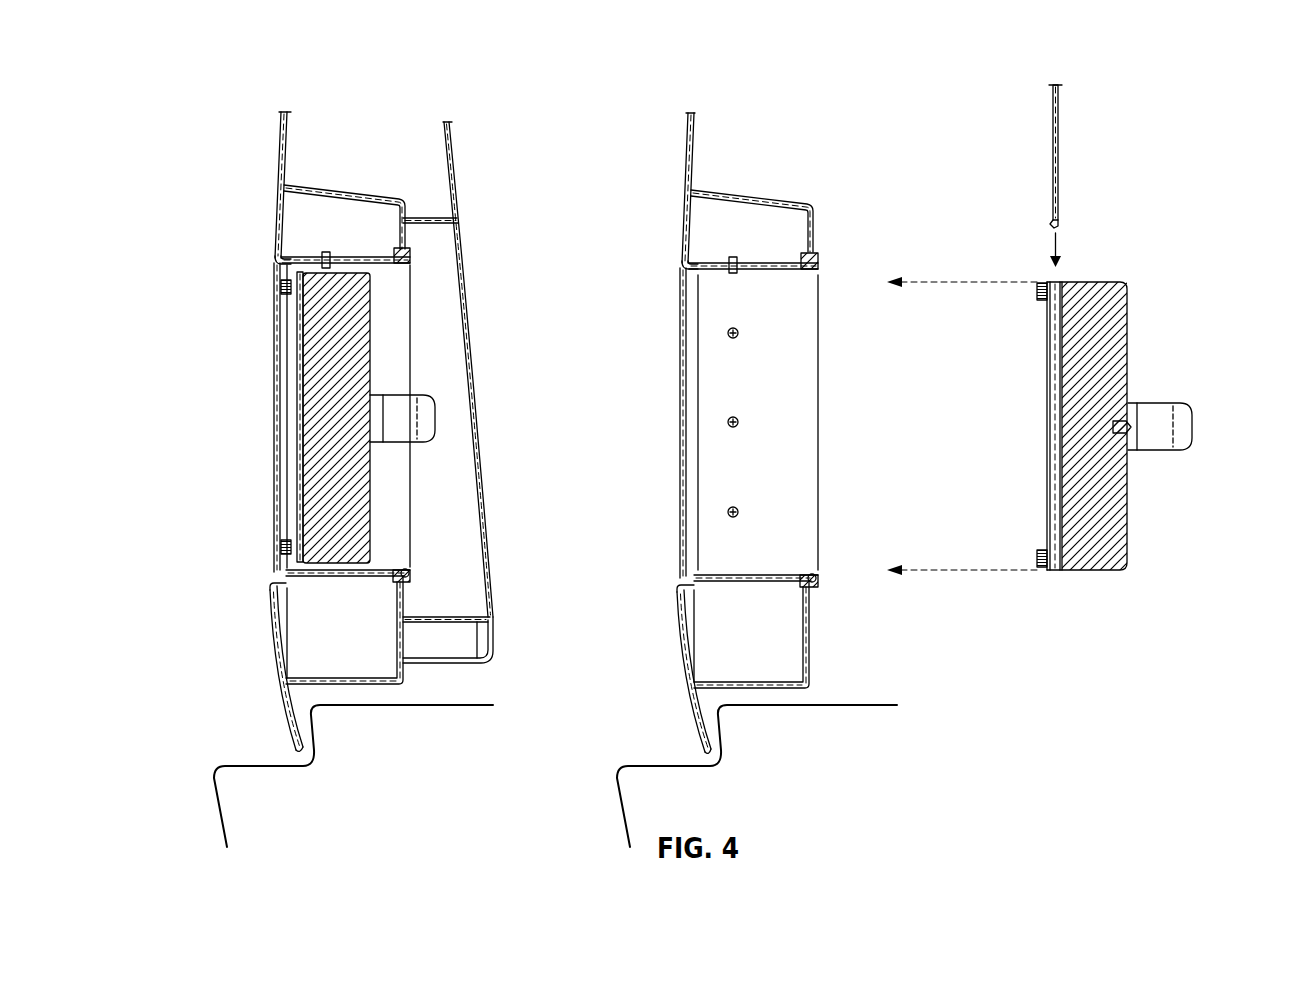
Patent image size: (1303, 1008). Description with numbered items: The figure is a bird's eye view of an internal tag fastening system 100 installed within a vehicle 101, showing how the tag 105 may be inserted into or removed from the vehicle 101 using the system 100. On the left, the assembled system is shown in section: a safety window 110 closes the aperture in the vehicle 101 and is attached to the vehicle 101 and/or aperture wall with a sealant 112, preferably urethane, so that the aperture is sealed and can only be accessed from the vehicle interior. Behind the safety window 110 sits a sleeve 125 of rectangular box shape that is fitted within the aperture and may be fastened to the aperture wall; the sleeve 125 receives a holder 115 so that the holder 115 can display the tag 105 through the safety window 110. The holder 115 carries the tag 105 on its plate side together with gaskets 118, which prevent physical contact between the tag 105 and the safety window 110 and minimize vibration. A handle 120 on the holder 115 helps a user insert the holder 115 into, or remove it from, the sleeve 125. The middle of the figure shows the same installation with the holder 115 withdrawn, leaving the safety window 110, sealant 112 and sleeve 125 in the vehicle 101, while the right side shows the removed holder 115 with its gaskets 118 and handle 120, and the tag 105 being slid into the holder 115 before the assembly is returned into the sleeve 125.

The internal tag fastening system 100 is at (203, 92).
The vehicle 101 is at (383, 133).
The tag 105 is at (297, 455).
The safety window 110 is at (275, 383).
The sealant 112 is at (284, 260).
The holder 115 is at (360, 372).
The gasket 118 is at (290, 548).
The handle 120 is at (435, 420).
The sleeve 125 is at (380, 270).